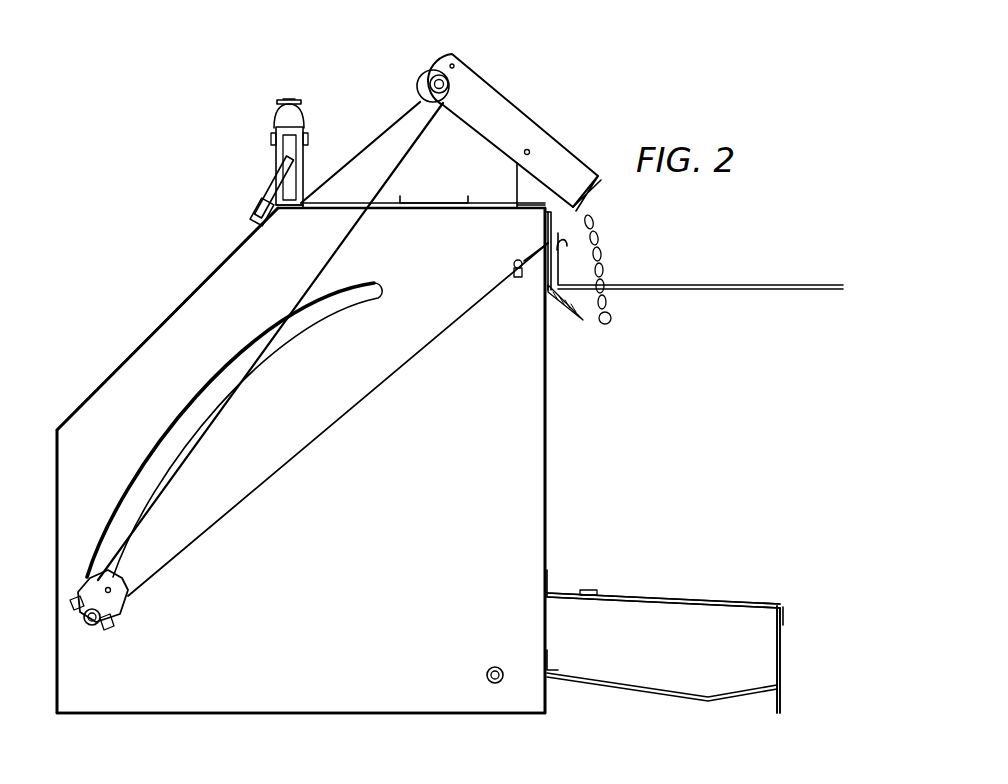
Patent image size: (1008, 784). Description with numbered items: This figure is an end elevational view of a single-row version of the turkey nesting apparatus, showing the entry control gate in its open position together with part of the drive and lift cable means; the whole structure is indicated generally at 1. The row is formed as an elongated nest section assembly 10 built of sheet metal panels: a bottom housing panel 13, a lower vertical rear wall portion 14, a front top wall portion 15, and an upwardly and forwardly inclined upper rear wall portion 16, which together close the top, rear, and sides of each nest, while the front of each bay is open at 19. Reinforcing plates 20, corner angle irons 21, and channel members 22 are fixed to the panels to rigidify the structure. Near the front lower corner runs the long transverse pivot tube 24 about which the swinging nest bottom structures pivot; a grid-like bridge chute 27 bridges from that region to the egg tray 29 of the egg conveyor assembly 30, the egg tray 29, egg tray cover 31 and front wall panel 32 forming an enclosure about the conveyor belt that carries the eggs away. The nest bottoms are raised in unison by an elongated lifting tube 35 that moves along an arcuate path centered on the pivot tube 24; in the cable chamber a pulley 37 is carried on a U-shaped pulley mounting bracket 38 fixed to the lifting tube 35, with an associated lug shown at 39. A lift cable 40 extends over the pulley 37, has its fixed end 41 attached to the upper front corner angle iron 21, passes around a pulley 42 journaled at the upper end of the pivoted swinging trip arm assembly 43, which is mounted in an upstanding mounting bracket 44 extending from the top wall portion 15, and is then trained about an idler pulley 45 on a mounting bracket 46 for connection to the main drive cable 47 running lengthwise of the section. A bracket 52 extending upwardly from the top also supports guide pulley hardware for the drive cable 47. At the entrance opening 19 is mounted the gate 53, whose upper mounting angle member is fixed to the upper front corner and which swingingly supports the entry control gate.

The refuse container assembly 1 is at (540, 458).
The nest section assembly 10 is at (113, 372).
The bottom housing panel 13 is at (352, 712).
The lower vertical rear wall portion 14 is at (57, 460).
The front top wall portion 15 is at (348, 208).
The upwardly and forwardly inclined upper rear wall portion 16 is at (186, 300).
The front opening 19 is at (547, 392).
The reinforcing plate 20 is at (228, 259).
The corner angle iron 21 is at (513, 210).
The channel member 22 is at (420, 208).
The pivot tube 24 is at (495, 664).
The bridge chute 27 is at (562, 665).
The egg tray 29 is at (662, 683).
The egg conveyor assembly 30 is at (790, 614).
The egg tray cover 31 is at (673, 597).
The front wall panel 32 is at (780, 657).
The lifting tube 35 is at (92, 633).
The pulley 37 is at (117, 565).
The U-shaped pulley mounting bracket 38 is at (127, 602).
The mounting lug 39 is at (115, 633).
The lift cable 40 is at (357, 124).
The fixed end 41 is at (546, 230).
The pulley 42 is at (430, 104).
The trip arm assembly 43 is at (507, 127).
The mounting bracket 44 is at (513, 186).
The idler pulley 45 is at (275, 165).
The mounting bracket 46 is at (250, 203).
The main drive cable 47 is at (290, 100).
The bracket 52 is at (302, 197).
The gate 53 is at (635, 288).